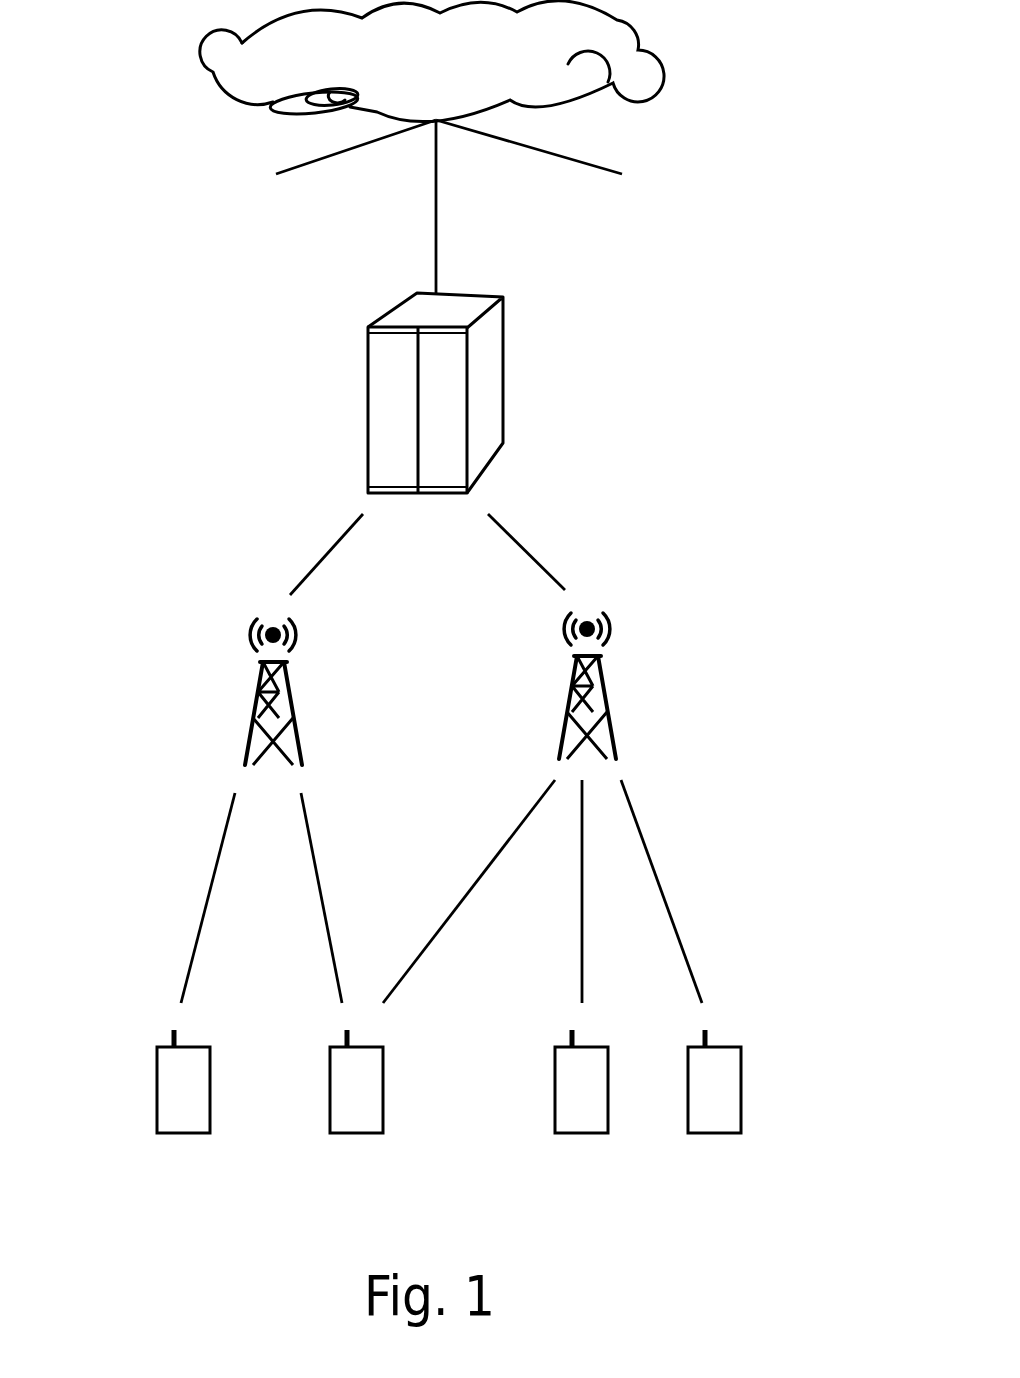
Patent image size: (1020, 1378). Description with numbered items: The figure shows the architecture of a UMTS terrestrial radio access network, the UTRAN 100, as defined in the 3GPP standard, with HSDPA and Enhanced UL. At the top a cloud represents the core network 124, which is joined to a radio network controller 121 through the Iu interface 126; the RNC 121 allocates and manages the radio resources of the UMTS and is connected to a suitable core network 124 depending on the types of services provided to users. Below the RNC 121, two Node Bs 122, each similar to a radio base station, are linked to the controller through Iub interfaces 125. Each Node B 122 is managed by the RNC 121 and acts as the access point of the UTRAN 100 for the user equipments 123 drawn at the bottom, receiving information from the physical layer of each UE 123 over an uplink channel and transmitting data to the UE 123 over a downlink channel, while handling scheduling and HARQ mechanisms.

The UTRAN 100 is at (151, 177).
The radio network controller 121 is at (514, 372).
The Node B 122 is at (223, 700).
The user equipment 123 is at (187, 1134).
The core network 124 is at (675, 57).
The Iub interface 125 is at (317, 555).
The Iu interface 126 is at (450, 228).